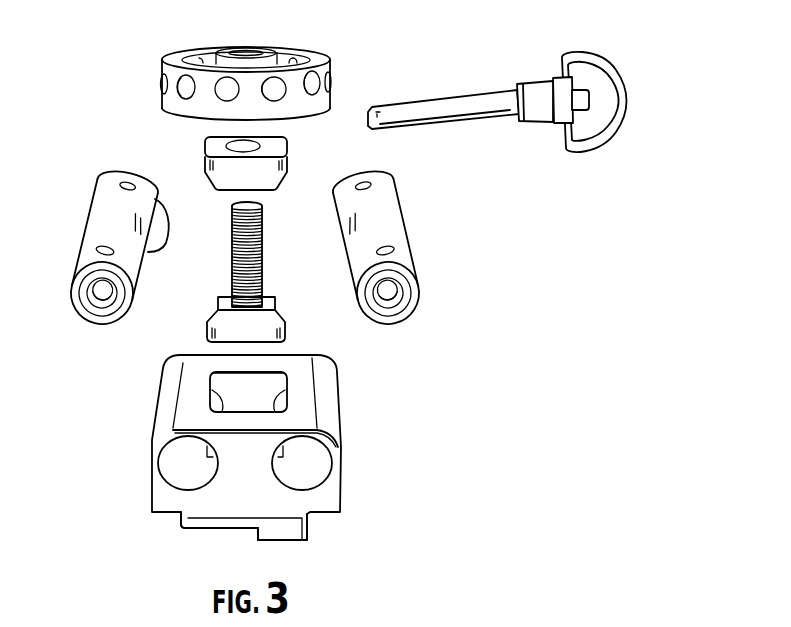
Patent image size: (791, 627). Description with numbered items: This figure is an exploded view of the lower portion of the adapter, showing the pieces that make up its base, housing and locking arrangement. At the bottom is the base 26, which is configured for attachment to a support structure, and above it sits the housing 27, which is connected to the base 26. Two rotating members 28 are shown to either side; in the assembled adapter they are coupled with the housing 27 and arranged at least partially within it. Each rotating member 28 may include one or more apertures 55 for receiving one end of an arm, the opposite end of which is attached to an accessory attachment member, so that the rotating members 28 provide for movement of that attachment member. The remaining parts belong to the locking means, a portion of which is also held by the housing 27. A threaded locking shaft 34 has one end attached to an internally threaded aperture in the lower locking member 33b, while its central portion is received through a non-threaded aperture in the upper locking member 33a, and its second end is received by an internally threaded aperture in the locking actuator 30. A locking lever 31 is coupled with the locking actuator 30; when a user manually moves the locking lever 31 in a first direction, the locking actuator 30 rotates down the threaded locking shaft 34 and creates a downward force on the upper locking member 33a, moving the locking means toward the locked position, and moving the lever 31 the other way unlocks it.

The base 26 is at (192, 526).
The housing 27 is at (327, 392).
The rotating member 28 is at (87, 223).
The locking actuator 30 is at (313, 53).
The locking lever 31 is at (483, 93).
The upper locking member 33a is at (292, 158).
The lower locking member 33b is at (288, 338).
The threaded locking shaft 34 is at (262, 257).
The aperture 55 is at (148, 252).